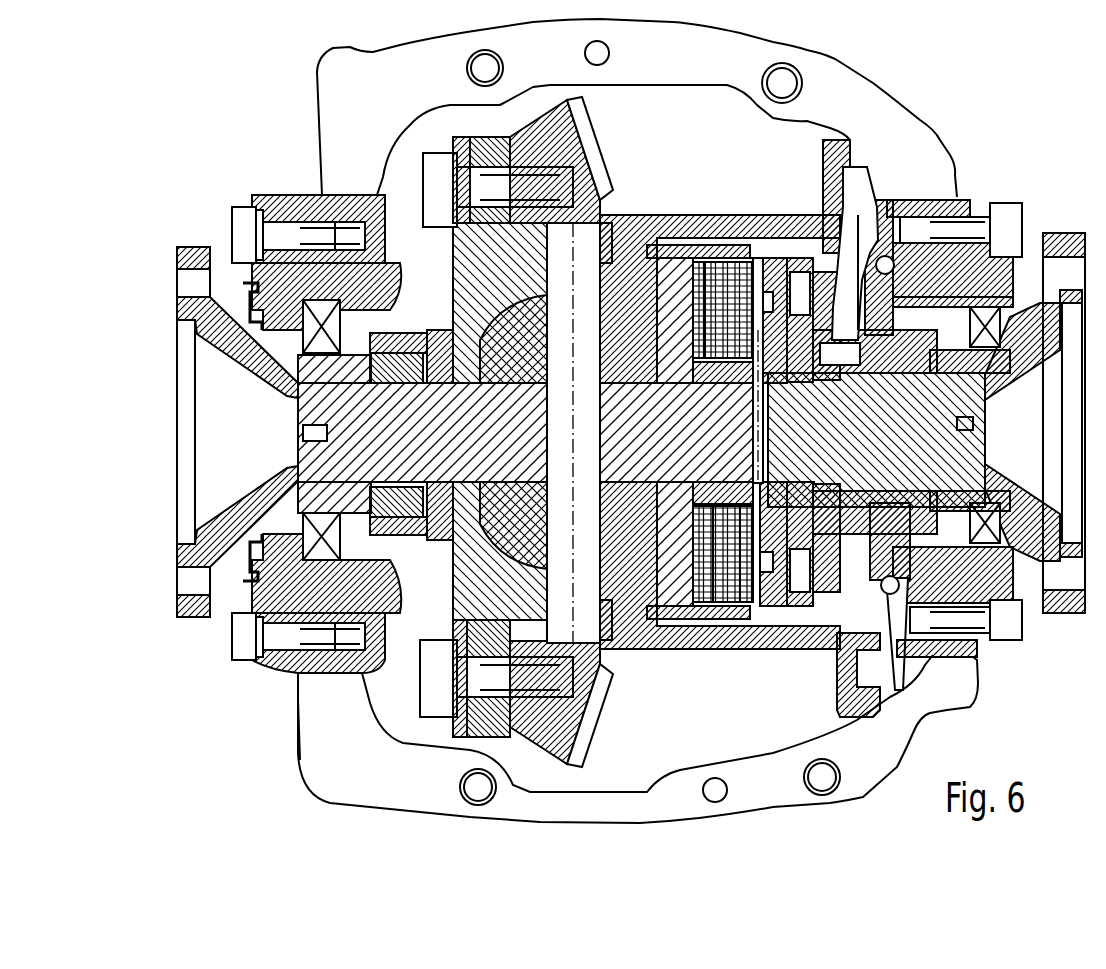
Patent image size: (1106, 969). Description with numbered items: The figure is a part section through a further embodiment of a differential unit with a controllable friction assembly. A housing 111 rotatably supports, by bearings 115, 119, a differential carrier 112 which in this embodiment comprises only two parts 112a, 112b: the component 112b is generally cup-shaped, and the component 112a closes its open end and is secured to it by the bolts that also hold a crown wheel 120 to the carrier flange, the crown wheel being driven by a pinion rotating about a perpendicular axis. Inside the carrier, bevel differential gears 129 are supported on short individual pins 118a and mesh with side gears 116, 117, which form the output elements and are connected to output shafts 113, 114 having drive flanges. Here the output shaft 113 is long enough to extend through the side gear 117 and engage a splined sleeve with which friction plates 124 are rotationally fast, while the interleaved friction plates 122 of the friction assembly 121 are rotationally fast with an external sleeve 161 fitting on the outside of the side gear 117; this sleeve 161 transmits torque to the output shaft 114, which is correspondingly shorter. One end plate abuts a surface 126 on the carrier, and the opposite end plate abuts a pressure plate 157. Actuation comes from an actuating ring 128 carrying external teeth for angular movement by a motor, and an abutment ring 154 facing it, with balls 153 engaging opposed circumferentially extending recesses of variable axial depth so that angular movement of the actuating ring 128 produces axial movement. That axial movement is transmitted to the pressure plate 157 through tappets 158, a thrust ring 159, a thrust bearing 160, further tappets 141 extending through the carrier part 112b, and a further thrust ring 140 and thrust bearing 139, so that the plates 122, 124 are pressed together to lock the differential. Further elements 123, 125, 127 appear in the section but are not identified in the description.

The housing 111 is at (328, 783).
The differential carrier 112 is at (626, 210).
The carrier component 112a is at (457, 735).
The carrier component 112b is at (487, 730).
The output shaft 113 is at (273, 513).
The output shaft 114 is at (977, 493).
The bearing 115 is at (403, 590).
The side gear 116 is at (498, 533).
The side gear 117 is at (670, 510).
The pins 118a is at (587, 670).
The bearing 119 is at (890, 515).
The crown wheel 120 is at (555, 767).
The friction assembly 121 is at (760, 649).
The friction plates 122 is at (713, 649).
The clutch pack 123 is at (740, 649).
The friction plates 124 is at (793, 649).
The actuating rod 125 is at (766, 480).
The surface 126 is at (698, 480).
The lever bracket 127 is at (827, 253).
The actuating ring 128 is at (853, 703).
The bevel differential gears 129 is at (603, 500).
The thrust bearing 139 is at (863, 253).
The thrust ring 140 is at (875, 432).
The tappets 141 is at (860, 292).
The balls 153 is at (897, 660).
The abutment ring 154 is at (920, 657).
The pressure plate 157 is at (735, 265).
The tappets 158 is at (735, 385).
The thrust ring 159 is at (745, 262).
The thrust bearing 160 is at (780, 258).
The external sleeve 161 is at (668, 649).